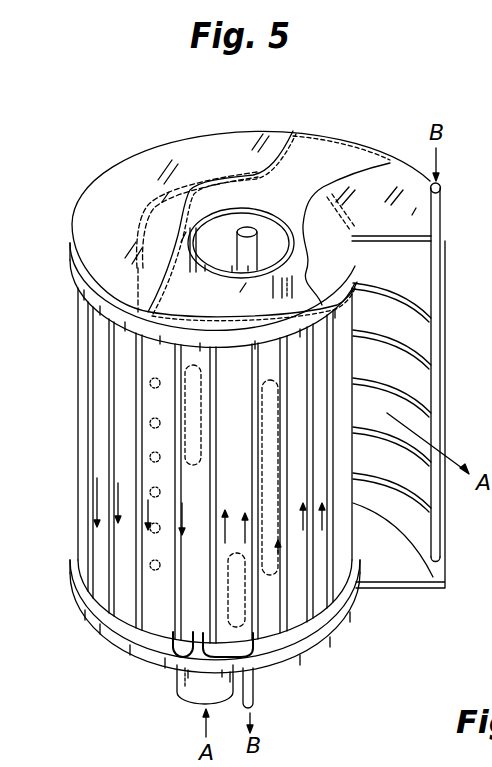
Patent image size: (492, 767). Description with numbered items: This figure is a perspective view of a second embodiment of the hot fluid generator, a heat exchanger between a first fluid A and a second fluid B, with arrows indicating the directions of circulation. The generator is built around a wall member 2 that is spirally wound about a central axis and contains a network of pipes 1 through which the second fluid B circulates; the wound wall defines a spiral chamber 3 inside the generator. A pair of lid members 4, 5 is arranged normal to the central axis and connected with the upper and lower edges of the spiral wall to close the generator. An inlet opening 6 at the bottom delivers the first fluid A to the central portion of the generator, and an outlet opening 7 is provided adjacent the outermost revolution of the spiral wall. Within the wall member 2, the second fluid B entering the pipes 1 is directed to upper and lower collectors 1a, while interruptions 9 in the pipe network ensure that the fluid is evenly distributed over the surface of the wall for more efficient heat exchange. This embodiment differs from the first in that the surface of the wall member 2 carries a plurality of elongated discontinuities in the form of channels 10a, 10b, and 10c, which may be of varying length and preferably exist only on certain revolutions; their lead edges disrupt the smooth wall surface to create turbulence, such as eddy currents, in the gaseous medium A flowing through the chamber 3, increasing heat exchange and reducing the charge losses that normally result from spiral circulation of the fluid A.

The pipes 1 is at (110, 445).
The collectors 1a is at (123, 632).
The wall member 2 is at (347, 135).
The spiral chamber 3 is at (253, 192).
The lid member 4 is at (133, 178).
The lid member 5 is at (304, 648).
The inlet opening 6 is at (186, 695).
The outlet opening 7 is at (410, 380).
The interruptions 9 is at (193, 654).
The channels 10a is at (150, 555).
The channels 10b is at (193, 465).
The channels 10c is at (255, 440).